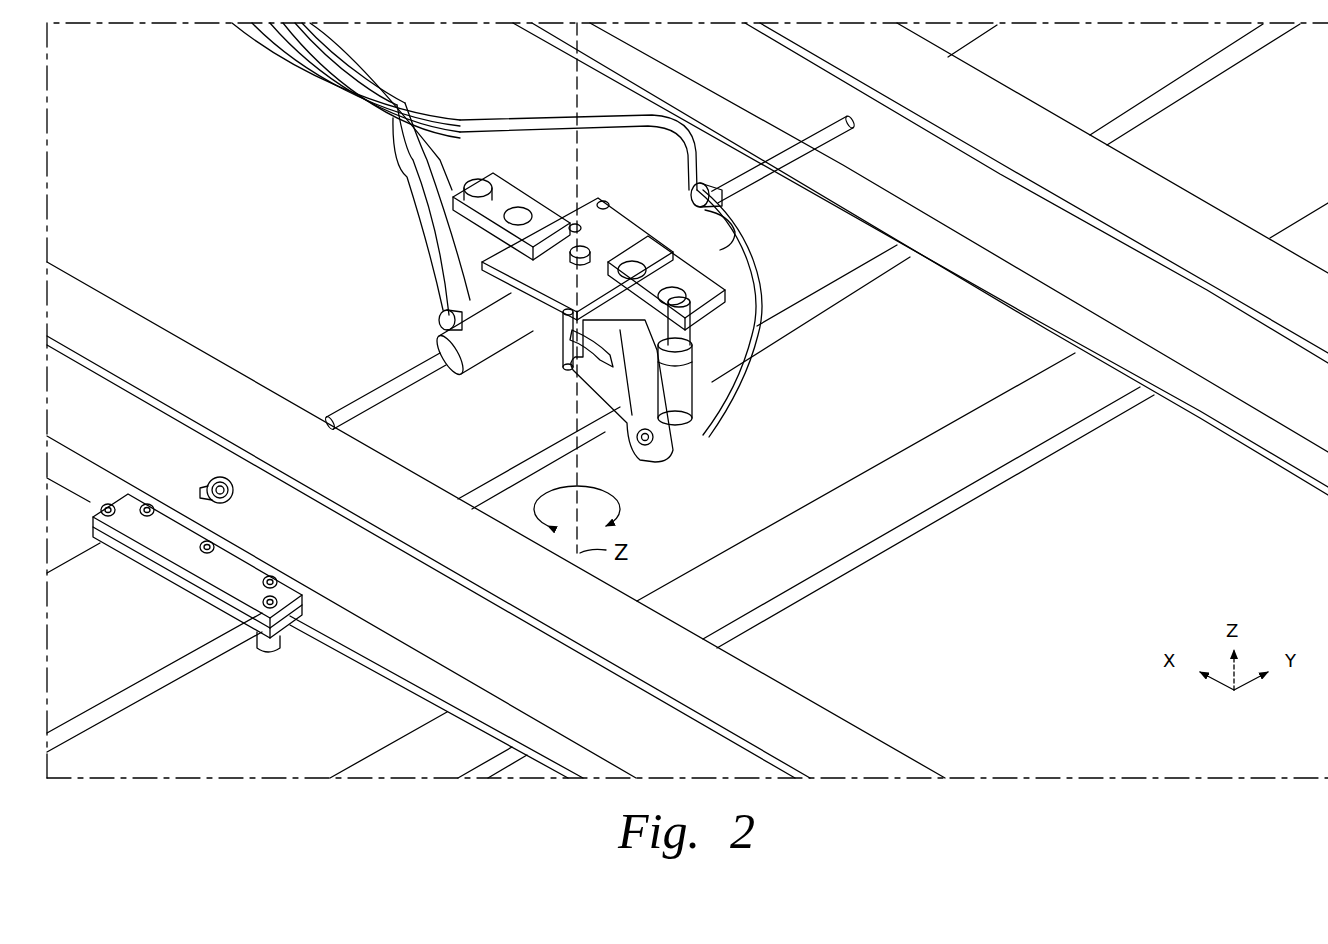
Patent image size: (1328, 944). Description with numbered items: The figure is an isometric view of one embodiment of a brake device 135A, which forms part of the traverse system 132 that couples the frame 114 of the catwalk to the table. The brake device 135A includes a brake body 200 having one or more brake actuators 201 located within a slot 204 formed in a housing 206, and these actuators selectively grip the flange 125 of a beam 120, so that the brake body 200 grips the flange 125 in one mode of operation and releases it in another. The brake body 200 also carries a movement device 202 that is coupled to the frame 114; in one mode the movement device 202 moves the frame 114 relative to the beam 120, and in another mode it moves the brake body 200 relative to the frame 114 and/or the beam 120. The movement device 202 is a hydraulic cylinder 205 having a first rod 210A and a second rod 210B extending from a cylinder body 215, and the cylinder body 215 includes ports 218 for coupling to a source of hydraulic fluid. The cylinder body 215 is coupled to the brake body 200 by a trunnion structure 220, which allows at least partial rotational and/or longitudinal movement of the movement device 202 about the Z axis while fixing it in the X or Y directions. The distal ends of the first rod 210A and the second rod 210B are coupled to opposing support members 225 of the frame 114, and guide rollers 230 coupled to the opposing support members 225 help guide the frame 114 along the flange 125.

The frame 114 is at (1208, 172).
The beam 120 is at (856, 255).
The flange 125 is at (805, 322).
The traverse system 132 is at (385, 234).
The brake device 135A is at (550, 195).
The brake body 200 is at (712, 292).
The brake actuator 201 is at (445, 168).
The movement device 202 is at (624, 218).
The slot 204 is at (622, 450).
The hydraulic cylinder 205 is at (722, 232).
The housing 206 is at (722, 393).
The first rod 210A is at (838, 128).
The second rod 210B is at (383, 418).
The cylinder body 215 is at (478, 360).
The port 218 is at (728, 203).
The trunnion structure 220 is at (525, 325).
The support member 225 is at (990, 95).
The guide roller 230 is at (268, 672).